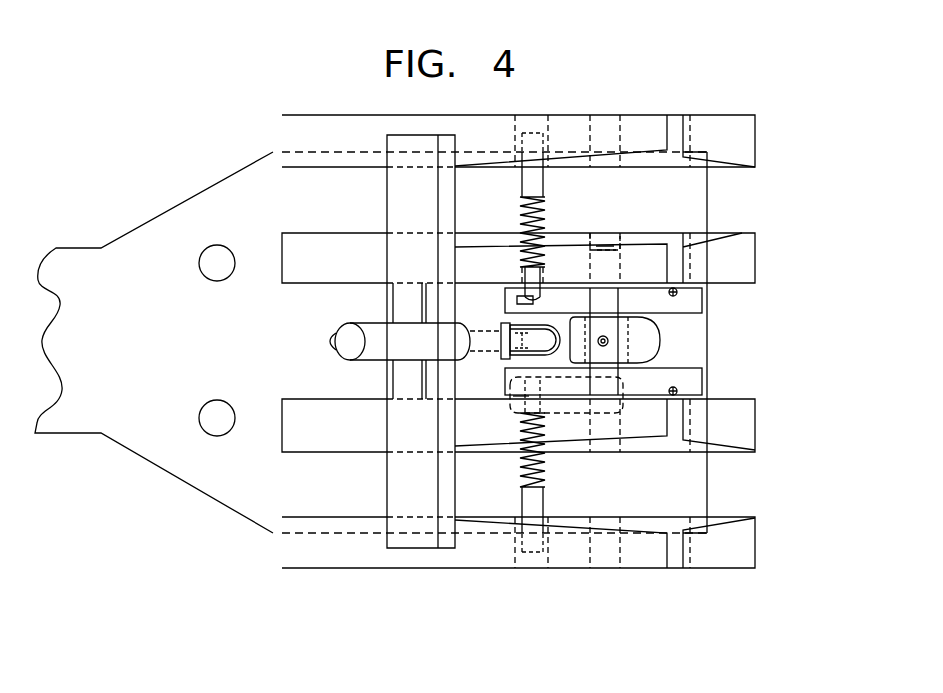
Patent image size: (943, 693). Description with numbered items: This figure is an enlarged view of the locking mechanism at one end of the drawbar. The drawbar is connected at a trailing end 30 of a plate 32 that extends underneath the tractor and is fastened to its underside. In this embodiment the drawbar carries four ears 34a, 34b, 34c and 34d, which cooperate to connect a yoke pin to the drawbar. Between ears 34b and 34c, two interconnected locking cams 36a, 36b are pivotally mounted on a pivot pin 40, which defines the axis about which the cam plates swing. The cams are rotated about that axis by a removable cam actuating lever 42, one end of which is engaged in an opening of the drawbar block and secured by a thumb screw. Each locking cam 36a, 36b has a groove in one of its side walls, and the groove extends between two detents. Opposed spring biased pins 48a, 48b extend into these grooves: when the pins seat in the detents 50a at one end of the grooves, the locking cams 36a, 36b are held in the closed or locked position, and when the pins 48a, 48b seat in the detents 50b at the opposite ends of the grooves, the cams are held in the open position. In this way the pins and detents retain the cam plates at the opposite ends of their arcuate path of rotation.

The trailing end 30 is at (700, 342).
The plate 32 is at (106, 351).
The ear 34a is at (745, 544).
The ear 34b is at (745, 428).
The ear 34c is at (745, 258).
The ear 34d is at (747, 143).
The locking cam 36a is at (695, 381).
The locking cam 36b is at (695, 300).
The pivot pin 40 is at (598, 250).
The cam actuating lever 42 is at (410, 330).
The spring biased pin 48a is at (545, 413).
The spring biased pin 48b is at (545, 272).
The detent 50a is at (516, 300).
The detent 50b is at (673, 288).